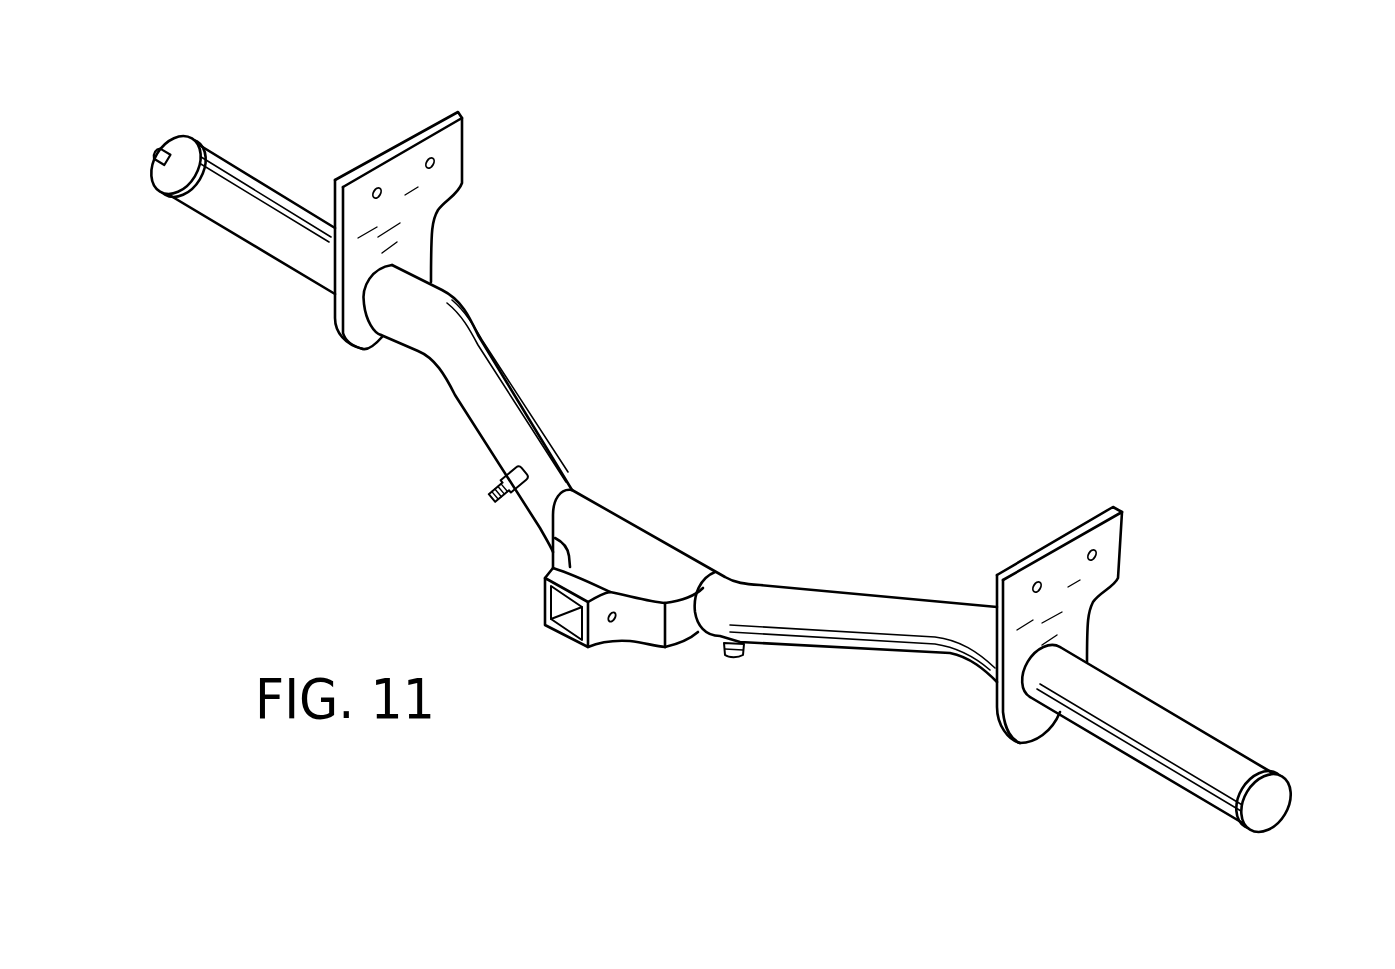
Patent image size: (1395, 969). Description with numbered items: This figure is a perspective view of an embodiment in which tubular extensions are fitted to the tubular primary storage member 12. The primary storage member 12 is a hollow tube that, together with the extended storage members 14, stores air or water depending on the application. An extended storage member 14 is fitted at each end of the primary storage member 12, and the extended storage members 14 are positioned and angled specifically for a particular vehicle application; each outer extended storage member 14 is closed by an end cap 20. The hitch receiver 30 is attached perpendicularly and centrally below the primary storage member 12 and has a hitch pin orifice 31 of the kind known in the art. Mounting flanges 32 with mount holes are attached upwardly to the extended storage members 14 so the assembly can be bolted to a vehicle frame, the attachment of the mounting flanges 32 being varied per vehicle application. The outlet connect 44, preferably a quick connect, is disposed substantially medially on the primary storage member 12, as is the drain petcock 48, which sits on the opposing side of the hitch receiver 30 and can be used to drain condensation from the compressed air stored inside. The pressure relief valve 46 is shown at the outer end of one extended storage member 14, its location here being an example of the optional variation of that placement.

The primary storage member 12 is at (500, 367).
The extended storage member 14 is at (262, 185).
The end cap 20 is at (195, 140).
The hitch receiver 30 is at (561, 667).
The hitch pin orifice 31 is at (612, 622).
The mounting flange 32 is at (464, 146).
The outlet connect 44 is at (490, 499).
The pressure relief valve 46 is at (156, 167).
The petcock drain 48 is at (733, 658).